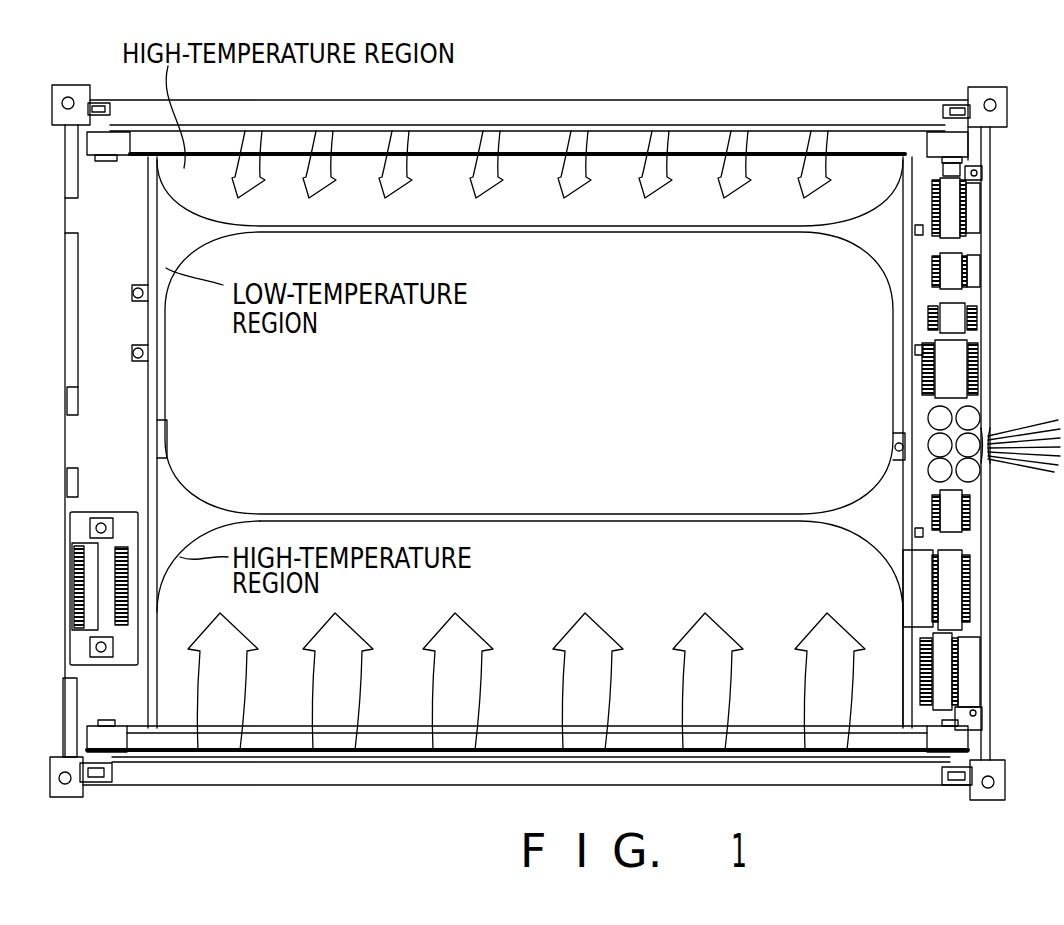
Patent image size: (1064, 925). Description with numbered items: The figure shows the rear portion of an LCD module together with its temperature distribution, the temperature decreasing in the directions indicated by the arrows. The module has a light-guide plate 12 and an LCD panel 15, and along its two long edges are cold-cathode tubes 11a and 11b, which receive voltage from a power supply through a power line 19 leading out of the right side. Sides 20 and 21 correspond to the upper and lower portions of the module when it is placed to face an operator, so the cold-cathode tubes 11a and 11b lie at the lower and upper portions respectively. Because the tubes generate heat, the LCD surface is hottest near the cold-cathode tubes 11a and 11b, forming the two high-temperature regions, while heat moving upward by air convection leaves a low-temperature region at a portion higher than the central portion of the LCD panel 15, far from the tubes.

The cold-cathode tube 11a is at (872, 738).
The cold-cathode tube 11b is at (915, 147).
The light-guide plate 12 is at (168, 243).
The LCD panel 15 is at (152, 421).
The power line 19 is at (1012, 458).
The side 20 is at (531, 100).
The side 21 is at (465, 786).